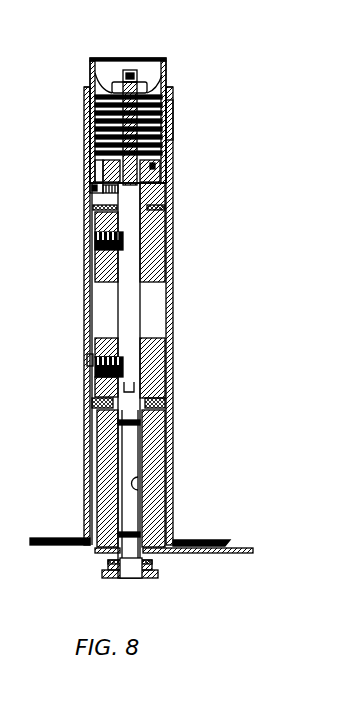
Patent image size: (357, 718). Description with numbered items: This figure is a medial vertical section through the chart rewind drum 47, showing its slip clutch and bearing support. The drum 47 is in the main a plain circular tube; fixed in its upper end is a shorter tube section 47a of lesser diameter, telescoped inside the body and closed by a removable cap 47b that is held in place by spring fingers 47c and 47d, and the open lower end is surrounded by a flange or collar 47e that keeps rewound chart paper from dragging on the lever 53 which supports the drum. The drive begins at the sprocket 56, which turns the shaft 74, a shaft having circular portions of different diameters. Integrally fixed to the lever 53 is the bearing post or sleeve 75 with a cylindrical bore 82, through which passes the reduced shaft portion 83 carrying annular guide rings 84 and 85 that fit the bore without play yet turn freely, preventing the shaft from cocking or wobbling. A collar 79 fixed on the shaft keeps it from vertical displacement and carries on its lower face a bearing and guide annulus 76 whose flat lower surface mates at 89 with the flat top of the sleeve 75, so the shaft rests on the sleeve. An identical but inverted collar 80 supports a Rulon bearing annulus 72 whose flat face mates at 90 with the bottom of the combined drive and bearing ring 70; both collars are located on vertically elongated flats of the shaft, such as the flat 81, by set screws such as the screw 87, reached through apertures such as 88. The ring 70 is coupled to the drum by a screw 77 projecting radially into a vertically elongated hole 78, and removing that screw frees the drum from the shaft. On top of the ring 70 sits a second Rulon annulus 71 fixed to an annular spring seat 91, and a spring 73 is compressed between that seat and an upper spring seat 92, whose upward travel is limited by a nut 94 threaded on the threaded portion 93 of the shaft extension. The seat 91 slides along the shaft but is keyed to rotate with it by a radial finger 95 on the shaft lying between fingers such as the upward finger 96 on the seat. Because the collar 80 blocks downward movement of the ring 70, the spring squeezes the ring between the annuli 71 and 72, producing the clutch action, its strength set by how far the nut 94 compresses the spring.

The rewind drum 47 is at (173, 272).
The tube section 47a is at (166, 72).
The cap 47b is at (138, 57).
The spring finger 47c is at (103, 72).
The spring finger 47d is at (167, 86).
The flange or collar 47e is at (205, 542).
The lever 53 is at (233, 555).
The sprocket 56 is at (157, 578).
The combined drive and bearing ring 70 is at (168, 193).
The Rulon annulus 71 is at (157, 170).
The bearing annulus 72 is at (173, 210).
The spring 73 is at (173, 117).
The shaft 74 is at (143, 305).
The bearing post 75 is at (160, 448).
The bearing and guide annulus 76 is at (165, 403).
The screw 77 is at (87, 192).
The vertically elongated hole 78 is at (87, 203).
The collar 79 is at (160, 350).
The collar 80 is at (173, 238).
The flat 81 is at (173, 357).
The cylindrical bore 82 is at (140, 483).
The reduced shaft portion 83 is at (130, 460).
The annular guide ring 84 is at (123, 533).
The annular guide ring 85 is at (118, 436).
The set screw 87 is at (97, 366).
The aperture 88 is at (87, 360).
The bearing surface mating location 89 is at (93, 412).
The bearing surface mating location 90 is at (93, 230).
The spring seat 91 is at (90, 172).
The spring seat 92 is at (93, 80).
The threaded portion 93 is at (95, 120).
The nut 94 is at (95, 100).
The radial finger 95 is at (95, 140).
The finger 96 is at (95, 150).